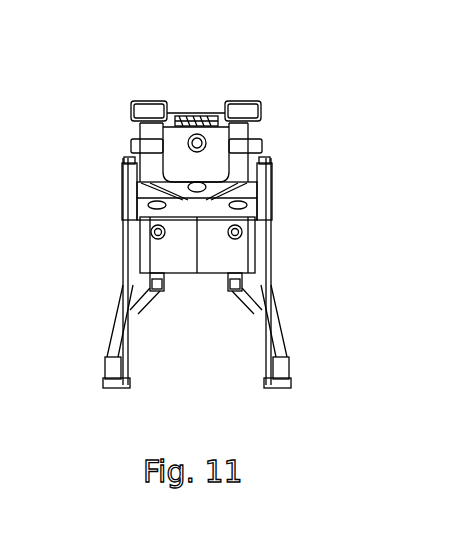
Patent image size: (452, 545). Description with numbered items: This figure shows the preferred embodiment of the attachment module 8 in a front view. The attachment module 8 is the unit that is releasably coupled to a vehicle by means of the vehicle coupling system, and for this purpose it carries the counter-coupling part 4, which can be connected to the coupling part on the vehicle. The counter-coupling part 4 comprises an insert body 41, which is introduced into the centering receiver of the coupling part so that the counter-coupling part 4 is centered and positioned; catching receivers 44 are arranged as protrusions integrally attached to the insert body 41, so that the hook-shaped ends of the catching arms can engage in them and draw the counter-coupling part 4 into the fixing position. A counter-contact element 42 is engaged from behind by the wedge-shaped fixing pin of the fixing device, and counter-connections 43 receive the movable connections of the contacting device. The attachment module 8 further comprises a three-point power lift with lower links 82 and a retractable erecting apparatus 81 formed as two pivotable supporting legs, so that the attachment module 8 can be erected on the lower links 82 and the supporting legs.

The counter-coupling part 4 is at (155, 130).
The attachment module 8 is at (160, 197).
The insert body 41 is at (243, 170).
The counter-contact element 42 is at (158, 232).
The counter-connections 43 is at (200, 113).
The catching receiver 44 is at (133, 140).
The retractable erecting apparatus 81 is at (262, 380).
The lower links 82 is at (273, 317).